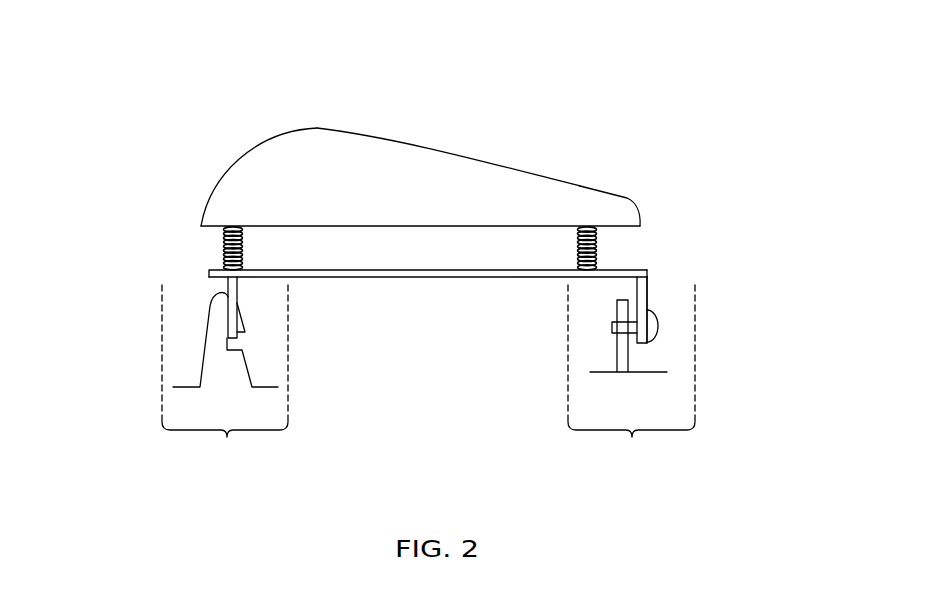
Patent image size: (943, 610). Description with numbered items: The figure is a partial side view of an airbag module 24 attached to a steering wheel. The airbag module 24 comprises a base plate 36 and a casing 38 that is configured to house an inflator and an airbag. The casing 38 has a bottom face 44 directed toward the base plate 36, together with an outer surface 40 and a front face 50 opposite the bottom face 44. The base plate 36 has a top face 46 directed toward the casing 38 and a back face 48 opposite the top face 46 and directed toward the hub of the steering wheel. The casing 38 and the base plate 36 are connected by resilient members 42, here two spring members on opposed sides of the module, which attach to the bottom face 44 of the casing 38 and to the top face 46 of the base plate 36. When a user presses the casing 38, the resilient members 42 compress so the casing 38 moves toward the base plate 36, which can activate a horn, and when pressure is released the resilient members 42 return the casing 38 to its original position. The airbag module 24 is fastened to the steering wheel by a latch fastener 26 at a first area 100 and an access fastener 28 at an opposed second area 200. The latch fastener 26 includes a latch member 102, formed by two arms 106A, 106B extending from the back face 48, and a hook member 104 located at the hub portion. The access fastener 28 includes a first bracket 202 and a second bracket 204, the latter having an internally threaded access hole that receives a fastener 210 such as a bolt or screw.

The airbag module 24 is at (213, 150).
The latch fastener 26 is at (186, 339).
The access fastener 28 is at (662, 302).
The base plate 36 is at (641, 269).
The casing 38 is at (331, 168).
The outer surface 40 is at (443, 162).
The resilient member 42 is at (223, 243).
The bottom face 44 is at (483, 226).
The top face 46 is at (310, 270).
The back face 48 is at (487, 277).
The front face 50 is at (560, 177).
The first area 100 is at (222, 372).
The latch member 102 is at (264, 295).
The hook member 104 is at (232, 368).
The arm 106A is at (228, 312).
The arm 106B is at (245, 321).
The second area 200 is at (679, 362).
The first bracket 202 is at (643, 287).
The second bracket 204 is at (623, 357).
The fastener 210 is at (658, 324).